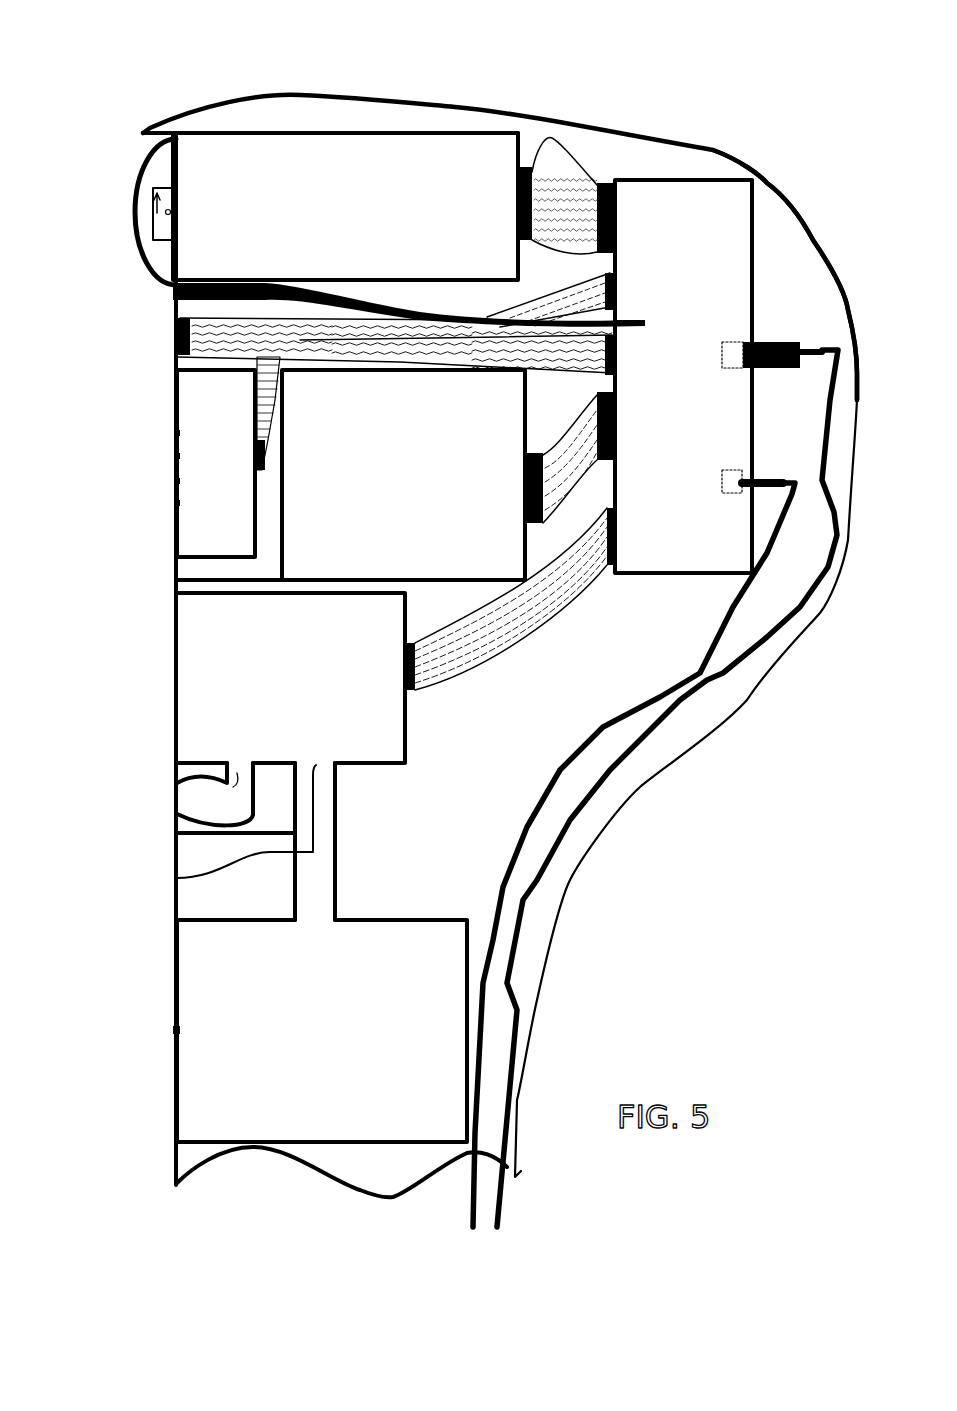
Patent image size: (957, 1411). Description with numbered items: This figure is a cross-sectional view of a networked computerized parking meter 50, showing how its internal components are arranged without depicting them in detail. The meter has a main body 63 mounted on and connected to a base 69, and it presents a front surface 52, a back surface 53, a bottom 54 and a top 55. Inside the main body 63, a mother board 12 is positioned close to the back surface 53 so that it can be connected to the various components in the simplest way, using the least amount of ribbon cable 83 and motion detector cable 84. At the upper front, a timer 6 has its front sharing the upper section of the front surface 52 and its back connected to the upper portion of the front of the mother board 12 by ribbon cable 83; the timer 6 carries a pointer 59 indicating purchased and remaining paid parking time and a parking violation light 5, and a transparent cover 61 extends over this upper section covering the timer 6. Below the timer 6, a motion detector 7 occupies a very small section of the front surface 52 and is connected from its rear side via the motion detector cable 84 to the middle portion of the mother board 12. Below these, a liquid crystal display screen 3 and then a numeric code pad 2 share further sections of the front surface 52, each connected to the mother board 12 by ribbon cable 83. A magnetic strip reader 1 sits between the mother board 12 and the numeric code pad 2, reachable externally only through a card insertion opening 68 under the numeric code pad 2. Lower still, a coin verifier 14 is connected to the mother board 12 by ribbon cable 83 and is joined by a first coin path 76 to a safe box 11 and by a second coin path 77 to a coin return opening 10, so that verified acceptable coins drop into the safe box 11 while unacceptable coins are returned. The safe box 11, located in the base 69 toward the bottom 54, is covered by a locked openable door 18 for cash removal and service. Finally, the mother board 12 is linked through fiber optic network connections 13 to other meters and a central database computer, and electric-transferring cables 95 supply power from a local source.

The magnetic strip reader 1 is at (188, 578).
The numeric code pad 2 is at (177, 443).
The liquid crystal display screen 3 is at (175, 335).
The parking violation light 5 is at (168, 210).
The timer 6 is at (170, 255).
The motion detector 7 is at (170, 300).
The coin return opening 10 is at (177, 813).
The safe box 11 is at (205, 1072).
The mother board 12 is at (753, 213).
The fiber optic network connections 13 is at (503, 1203).
The coin verifier 14 is at (177, 665).
The locked openable door 18 is at (173, 1030).
The networked computerized parking meter 50 is at (357, 97).
The front surface 52 is at (177, 488).
The back surface 53 is at (760, 688).
The bottom 54 is at (195, 1175).
The top 55 is at (455, 105).
The pointer 59 is at (150, 214).
The transparent cover 61 is at (152, 152).
The main body 63 is at (718, 152).
The card insertion opening 68 is at (177, 584).
The base 69 is at (175, 898).
The first coin path 76 is at (177, 878).
The second coin path 77 is at (233, 788).
The ribbon cable 83 is at (547, 183).
The motion detector cable 84 is at (612, 312).
The electric-transferring cables 95 is at (470, 1193).